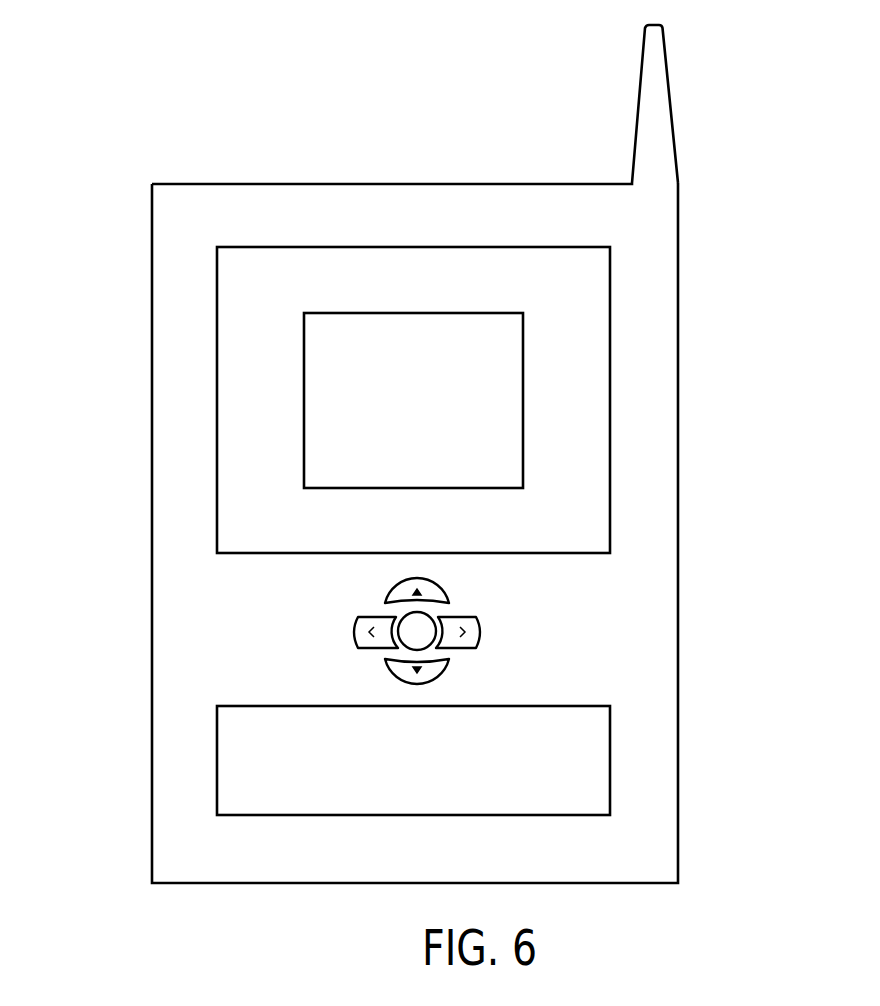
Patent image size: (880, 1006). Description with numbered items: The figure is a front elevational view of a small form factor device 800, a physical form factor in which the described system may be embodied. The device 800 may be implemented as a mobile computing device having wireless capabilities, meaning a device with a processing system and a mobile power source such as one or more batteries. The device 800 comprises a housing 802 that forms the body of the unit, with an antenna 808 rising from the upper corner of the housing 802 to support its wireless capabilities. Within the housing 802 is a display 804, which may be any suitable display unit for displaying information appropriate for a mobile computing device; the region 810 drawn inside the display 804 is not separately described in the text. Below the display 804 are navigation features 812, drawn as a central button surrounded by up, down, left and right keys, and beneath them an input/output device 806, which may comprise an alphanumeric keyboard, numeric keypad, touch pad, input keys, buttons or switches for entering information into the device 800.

The small form factor device 800 is at (153, 125).
The housing 802 is at (152, 622).
The display 804 is at (610, 304).
The input/output (I/O) device 806 is at (610, 760).
The antenna 808 is at (638, 104).
The display screen 810 is at (414, 313).
The navigation features 812 is at (512, 633).